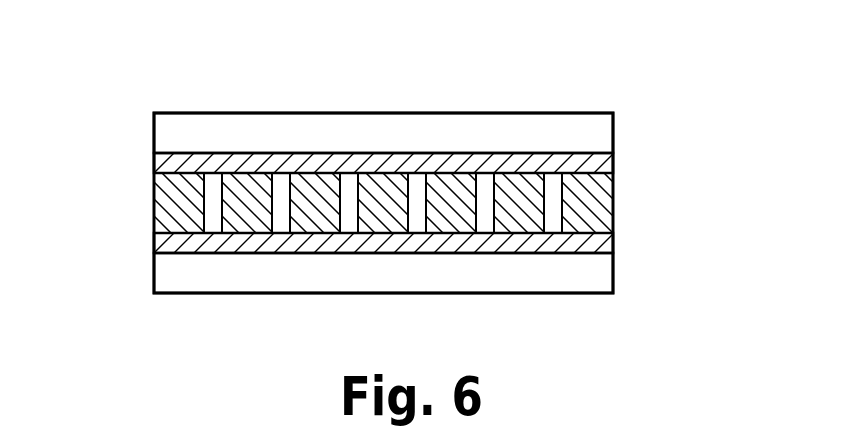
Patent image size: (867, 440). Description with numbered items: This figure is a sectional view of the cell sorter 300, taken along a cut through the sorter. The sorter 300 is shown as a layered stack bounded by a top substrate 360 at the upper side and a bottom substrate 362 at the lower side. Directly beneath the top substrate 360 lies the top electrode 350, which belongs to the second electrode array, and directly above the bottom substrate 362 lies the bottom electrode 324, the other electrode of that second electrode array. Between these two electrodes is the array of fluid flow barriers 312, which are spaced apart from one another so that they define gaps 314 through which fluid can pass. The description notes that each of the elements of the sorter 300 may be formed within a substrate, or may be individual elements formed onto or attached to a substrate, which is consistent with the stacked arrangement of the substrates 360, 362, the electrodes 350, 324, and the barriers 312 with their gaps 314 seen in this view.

The sorter 300 is at (484, 92).
The top substrate 360 is at (500, 124).
The bottom substrate 362 is at (532, 282).
The top electrode 350 is at (615, 160).
The bottom electrode 324 is at (615, 245).
The fluid flow barriers 312 is at (166, 197).
The gaps 314 is at (212, 183).